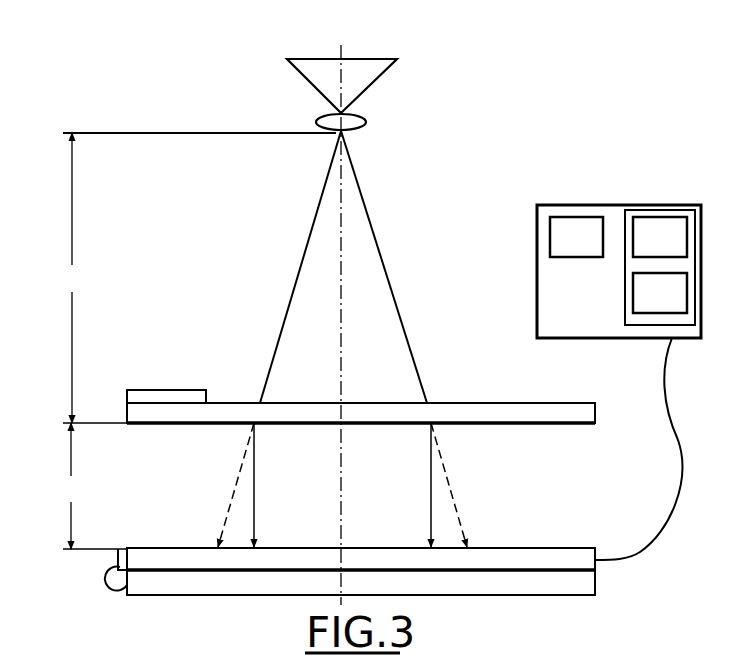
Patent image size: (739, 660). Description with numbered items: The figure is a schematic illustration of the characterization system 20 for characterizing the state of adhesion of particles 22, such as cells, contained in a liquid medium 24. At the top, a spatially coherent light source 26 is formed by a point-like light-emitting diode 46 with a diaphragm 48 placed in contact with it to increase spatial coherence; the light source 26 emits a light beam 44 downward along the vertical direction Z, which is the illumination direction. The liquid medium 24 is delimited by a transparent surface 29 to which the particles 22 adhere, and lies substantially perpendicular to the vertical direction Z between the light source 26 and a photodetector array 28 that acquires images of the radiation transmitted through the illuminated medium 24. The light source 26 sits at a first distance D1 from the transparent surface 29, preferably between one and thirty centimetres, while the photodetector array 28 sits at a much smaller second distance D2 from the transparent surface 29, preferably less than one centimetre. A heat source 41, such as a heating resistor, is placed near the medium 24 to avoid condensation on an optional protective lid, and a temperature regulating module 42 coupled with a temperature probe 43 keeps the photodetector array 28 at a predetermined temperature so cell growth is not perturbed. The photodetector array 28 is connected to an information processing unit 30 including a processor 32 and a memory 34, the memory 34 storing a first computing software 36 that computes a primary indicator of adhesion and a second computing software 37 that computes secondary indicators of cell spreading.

The characterization system 20 is at (565, 113).
The particles 22 is at (351, 420).
The liquid medium 24 is at (573, 415).
The light source 26 is at (391, 100).
The photodetector array 28 is at (520, 560).
The transparent surface 29 is at (303, 425).
The information processing unit 30 is at (616, 205).
The processor 32 is at (587, 248).
The memory 34 is at (624, 291).
The first computing software 36 is at (670, 248).
The second computing software 37 is at (670, 305).
The heat source 41 is at (156, 391).
The temperature regulating module 42 is at (490, 585).
The temperature probe 43 is at (102, 561).
The light beam 44 is at (386, 266).
The light-emitting diode 46 is at (356, 81).
The diaphragm 48 is at (357, 119).
The vertical direction Z is at (340, 61).
The first distance D1 is at (198, 278).
The second distance D2 is at (93, 486).